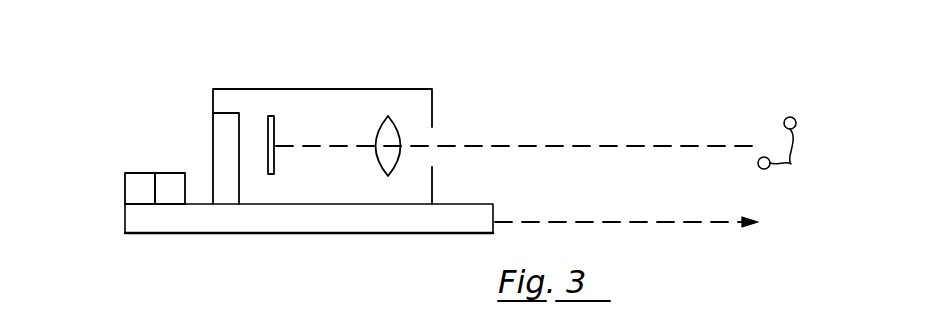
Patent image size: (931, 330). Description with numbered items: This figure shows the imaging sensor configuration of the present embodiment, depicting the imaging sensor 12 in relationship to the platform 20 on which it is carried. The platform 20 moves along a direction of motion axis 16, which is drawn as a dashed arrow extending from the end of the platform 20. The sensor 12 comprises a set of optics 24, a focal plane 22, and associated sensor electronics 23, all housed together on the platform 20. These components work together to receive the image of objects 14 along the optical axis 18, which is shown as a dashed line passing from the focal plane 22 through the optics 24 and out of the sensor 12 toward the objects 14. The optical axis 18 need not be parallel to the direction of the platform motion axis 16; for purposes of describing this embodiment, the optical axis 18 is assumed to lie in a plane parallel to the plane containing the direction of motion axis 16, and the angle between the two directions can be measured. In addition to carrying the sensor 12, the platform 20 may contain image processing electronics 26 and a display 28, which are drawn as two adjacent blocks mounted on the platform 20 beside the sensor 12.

The imaging sensor 12 is at (375, 79).
The objects 14 is at (789, 156).
The axis 16 is at (634, 218).
The optical axis 18 is at (625, 143).
The platform 20 is at (343, 229).
The focal plane 22 is at (275, 128).
The sensor electronics 23 is at (225, 140).
The optics 24 is at (378, 166).
The image processing electronics 26 is at (170, 182).
The display 28 is at (135, 186).